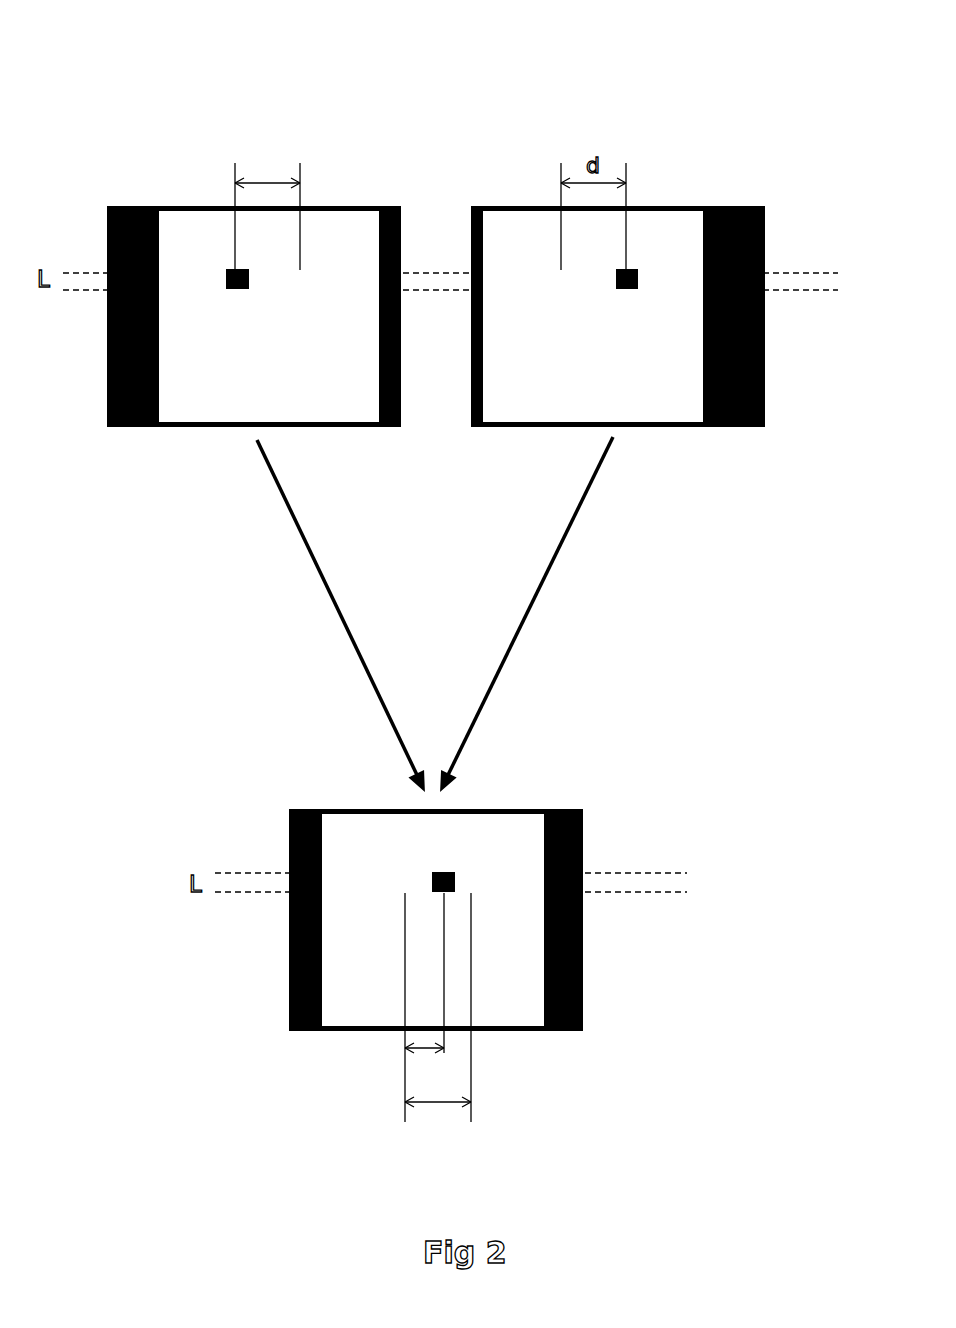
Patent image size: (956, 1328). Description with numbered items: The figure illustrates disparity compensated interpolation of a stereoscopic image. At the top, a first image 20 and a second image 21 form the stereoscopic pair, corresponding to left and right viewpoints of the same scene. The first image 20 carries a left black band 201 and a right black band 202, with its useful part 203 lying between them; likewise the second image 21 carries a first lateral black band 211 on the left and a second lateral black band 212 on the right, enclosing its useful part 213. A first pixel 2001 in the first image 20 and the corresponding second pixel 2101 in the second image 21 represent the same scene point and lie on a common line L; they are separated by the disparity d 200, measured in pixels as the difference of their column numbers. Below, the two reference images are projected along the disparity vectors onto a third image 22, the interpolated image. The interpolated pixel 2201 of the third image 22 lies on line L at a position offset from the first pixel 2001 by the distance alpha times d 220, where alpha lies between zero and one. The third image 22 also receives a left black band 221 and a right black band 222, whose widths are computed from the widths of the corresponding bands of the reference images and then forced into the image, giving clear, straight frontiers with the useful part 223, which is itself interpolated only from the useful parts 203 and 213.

The first image 20 is at (175, 206).
The disparity d 200 is at (262, 148).
The first pixel 2001 is at (249, 285).
The left black band 201 is at (132, 428).
The right black band 202 is at (390, 428).
The useful part 203 is at (252, 393).
The second image 21 is at (674, 206).
The second pixel 2101 is at (616, 287).
The first lateral black band 211 is at (474, 428).
The second lateral black band 212 is at (745, 428).
The useful part 213 is at (637, 398).
The third image 22 is at (352, 808).
The interpolated pixel 2201 is at (448, 872).
The distance alpha.d 220 is at (397, 1075).
The left black band 221 is at (290, 912).
The right black band 222 is at (583, 895).
The useful part 223 is at (522, 836).